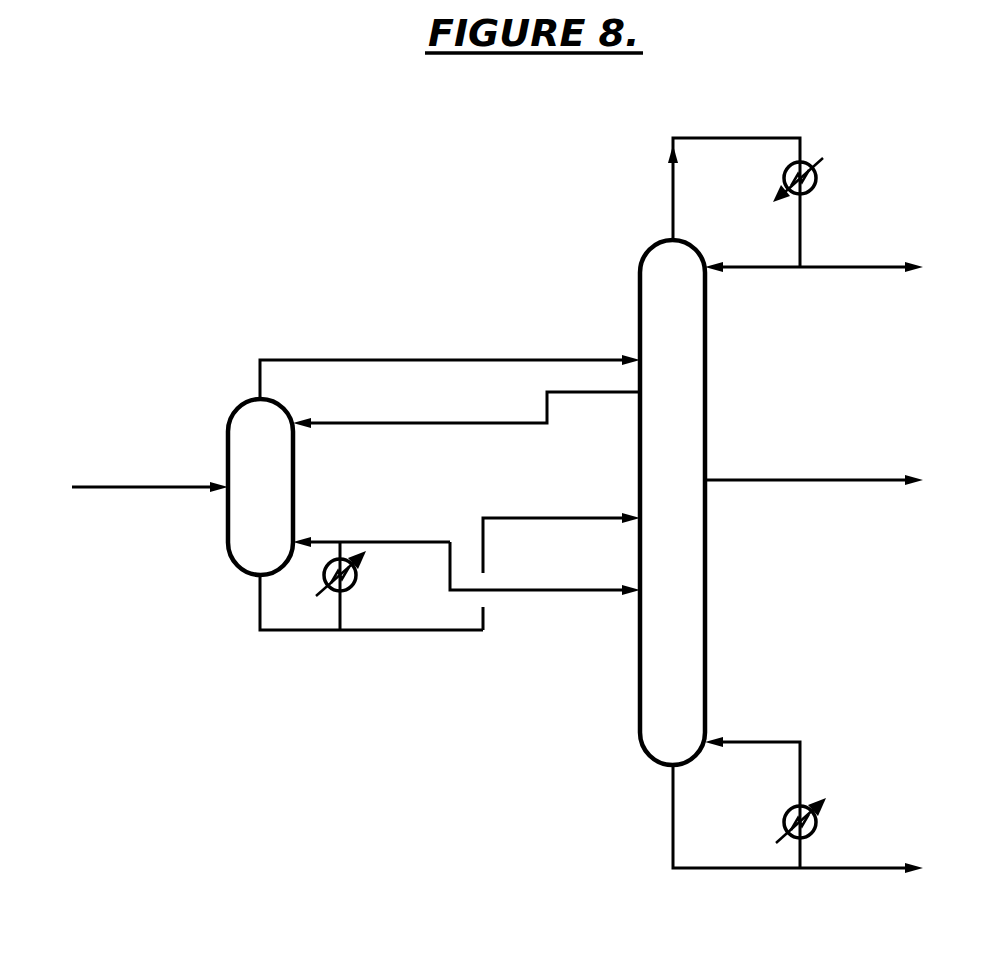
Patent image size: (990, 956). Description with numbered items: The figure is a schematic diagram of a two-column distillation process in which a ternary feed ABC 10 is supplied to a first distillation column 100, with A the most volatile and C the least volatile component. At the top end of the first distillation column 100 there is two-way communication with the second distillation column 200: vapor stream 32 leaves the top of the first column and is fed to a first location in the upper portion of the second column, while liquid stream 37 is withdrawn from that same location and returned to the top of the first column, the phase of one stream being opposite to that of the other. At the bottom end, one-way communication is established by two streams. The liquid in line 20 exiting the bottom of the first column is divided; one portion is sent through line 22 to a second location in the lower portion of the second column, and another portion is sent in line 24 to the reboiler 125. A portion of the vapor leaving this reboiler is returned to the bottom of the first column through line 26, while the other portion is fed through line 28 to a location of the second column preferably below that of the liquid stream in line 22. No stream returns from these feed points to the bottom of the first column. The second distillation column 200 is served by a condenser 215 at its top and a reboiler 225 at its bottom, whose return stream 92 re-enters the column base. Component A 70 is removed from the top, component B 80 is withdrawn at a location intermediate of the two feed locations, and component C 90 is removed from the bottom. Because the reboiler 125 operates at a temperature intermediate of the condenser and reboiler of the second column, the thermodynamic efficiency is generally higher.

The ternary feed ABC 10 is at (122, 496).
The first distillation column 100 is at (305, 478).
The vapor stream 32 is at (492, 357).
The liquid stream 37 is at (493, 428).
The line 26 is at (320, 538).
The line 24 is at (345, 612).
The reboiler 125 is at (332, 592).
The line 20 is at (258, 620).
The line 22 is at (542, 532).
The line 28 is at (542, 599).
The second distillation column 200 is at (706, 605).
The condenser 215 is at (818, 164).
The component A product stream 70 is at (848, 264).
The component B product stream 80 is at (802, 477).
The reboiler return stream 92 is at (750, 740).
The reboiler 225 is at (822, 820).
The component C product stream 90 is at (852, 872).